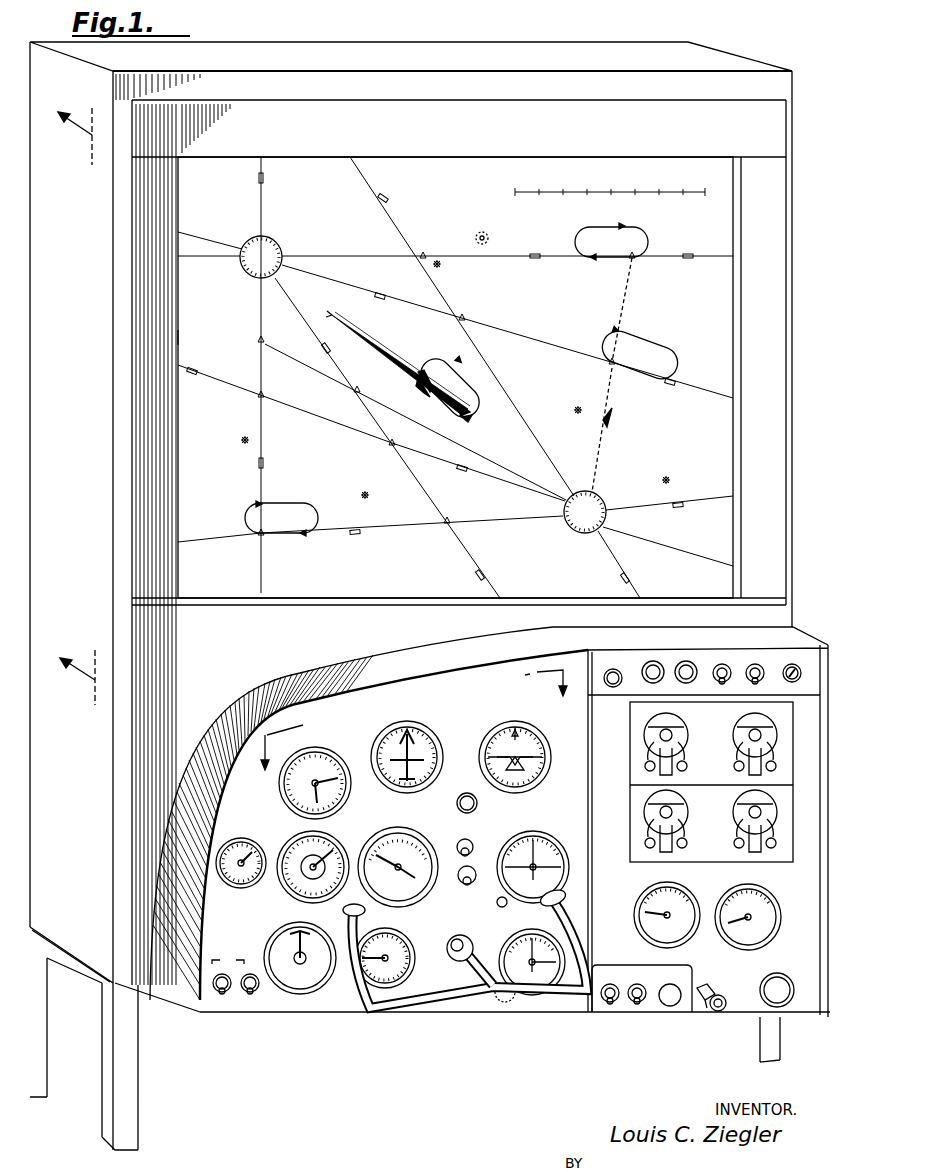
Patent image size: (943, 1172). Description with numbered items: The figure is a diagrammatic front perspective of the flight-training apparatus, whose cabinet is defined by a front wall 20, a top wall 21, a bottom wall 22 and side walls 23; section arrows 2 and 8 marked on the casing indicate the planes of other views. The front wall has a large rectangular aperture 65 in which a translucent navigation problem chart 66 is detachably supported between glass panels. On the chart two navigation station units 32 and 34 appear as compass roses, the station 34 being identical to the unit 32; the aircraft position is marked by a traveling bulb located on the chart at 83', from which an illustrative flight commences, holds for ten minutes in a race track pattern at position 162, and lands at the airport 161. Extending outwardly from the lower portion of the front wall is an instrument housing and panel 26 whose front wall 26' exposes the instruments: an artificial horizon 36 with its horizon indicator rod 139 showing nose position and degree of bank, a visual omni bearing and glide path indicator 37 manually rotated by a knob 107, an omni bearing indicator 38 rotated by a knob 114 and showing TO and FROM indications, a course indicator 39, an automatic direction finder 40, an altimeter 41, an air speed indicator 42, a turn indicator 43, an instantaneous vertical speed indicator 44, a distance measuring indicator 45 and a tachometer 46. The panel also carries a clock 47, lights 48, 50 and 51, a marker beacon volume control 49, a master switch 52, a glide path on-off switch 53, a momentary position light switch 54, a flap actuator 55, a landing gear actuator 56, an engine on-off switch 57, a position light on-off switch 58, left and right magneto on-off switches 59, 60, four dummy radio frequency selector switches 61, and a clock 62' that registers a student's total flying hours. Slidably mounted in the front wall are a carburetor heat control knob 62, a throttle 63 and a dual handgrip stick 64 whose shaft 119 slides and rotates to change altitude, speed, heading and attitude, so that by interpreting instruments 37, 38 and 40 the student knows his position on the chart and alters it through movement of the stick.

The section line 2- 2 is at (67, 405).
The section line 8- 8 is at (408, 735).
The front wall 20 is at (175, 722).
The top wall 21 is at (735, 57).
The bottom wall 22 is at (82, 975).
The side walls 23 is at (84, 438).
The instrument housing and panel 26 is at (472, 835).
The front wall of instrument housing 26' is at (535, 1027).
The navigation station unit 32 is at (272, 241).
The navigation station 34 is at (604, 500).
The artificial horizon 36 is at (525, 751).
The visual omni bearing and glide path indicator 37 is at (550, 850).
The omni bearing indicator (OBI) 38 is at (560, 942).
The course indicator 39 is at (422, 733).
The automatic direction finder (ADF) 40 is at (400, 835).
The altimeter 41 is at (323, 760).
The air speed indicator 42 is at (292, 845).
The turn indicator 43 is at (278, 938).
The instantaneous vertical speed indicator 44 is at (410, 945).
The distance measuring indicator (DME) 45 is at (640, 898).
The tachometer 46 is at (772, 900).
The clock 47 is at (226, 884).
The light 48 is at (462, 796).
The marker beacon volume control 49 is at (607, 690).
The light 50 is at (653, 660).
The light 51 is at (686, 660).
The master switch 52 is at (797, 668).
The glide path on-off switch 53 is at (724, 663).
The momentary position light switch 54 is at (757, 663).
The flap actuator 55 is at (606, 1004).
The landing gear actuator 56 is at (637, 1004).
The engine on-off switch 57 is at (458, 840).
The position light on-off switch 58 is at (474, 866).
The left magneto on-off switch 59 is at (223, 998).
The right magneto on-off switch 60 is at (251, 998).
The dummy radio frequency selector switches 61 is at (720, 795).
The carburetor heat control knob 62 is at (668, 1007).
The clock 62' is at (793, 1011).
The throttle 63 is at (720, 1011).
The dual handgrip stick 64 is at (465, 968).
The rectangular aperture 65 is at (182, 328).
The translucent navigation problem chart 66 is at (333, 201).
The bulb position on chart 83' is at (475, 218).
The knob 107 is at (499, 902).
The knob 114 is at (506, 1000).
The shaft 119 is at (456, 953).
The horizon indicator rod 139 is at (503, 740).
The airport 161 is at (332, 315).
The position 162 is at (604, 380).